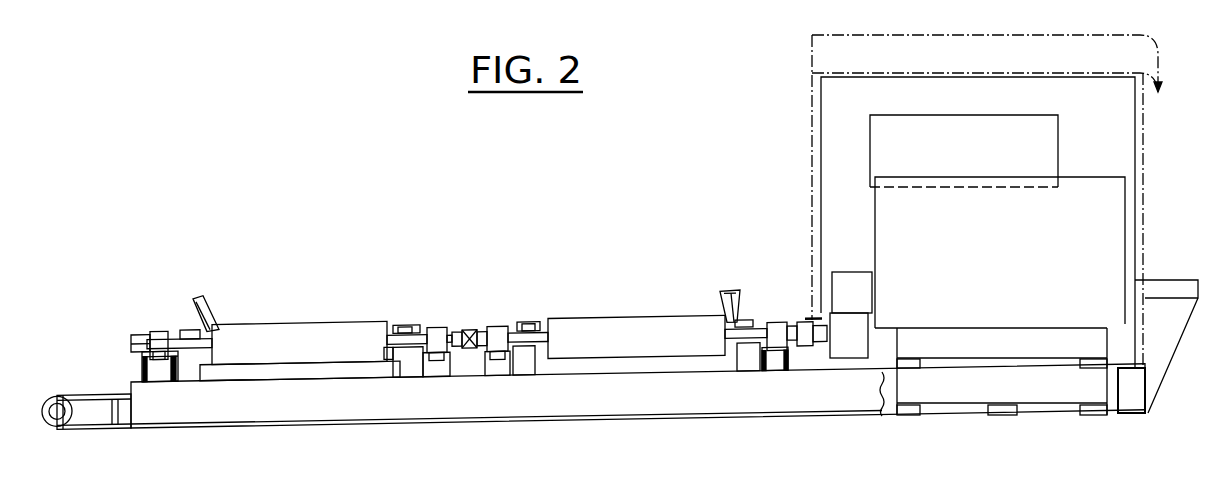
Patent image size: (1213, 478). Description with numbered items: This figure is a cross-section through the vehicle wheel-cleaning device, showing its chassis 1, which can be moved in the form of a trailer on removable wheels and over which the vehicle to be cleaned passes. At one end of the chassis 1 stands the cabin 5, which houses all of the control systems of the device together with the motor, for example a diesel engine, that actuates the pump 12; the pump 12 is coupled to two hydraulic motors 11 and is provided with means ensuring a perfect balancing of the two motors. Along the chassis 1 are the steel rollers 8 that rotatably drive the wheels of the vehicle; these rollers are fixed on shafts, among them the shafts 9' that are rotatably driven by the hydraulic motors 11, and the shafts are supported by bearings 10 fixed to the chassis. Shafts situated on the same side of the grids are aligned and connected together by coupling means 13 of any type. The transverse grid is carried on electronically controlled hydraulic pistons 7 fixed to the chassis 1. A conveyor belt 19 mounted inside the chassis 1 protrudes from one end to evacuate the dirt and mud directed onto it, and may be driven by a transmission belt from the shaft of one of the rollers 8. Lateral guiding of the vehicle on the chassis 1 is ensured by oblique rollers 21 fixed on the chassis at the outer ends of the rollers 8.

The chassis 1 is at (445, 419).
The cabin 5 is at (987, 201).
The hydraulic pistons 7 is at (187, 371).
The steel rollers 8 is at (318, 333).
The shafts 9' is at (794, 323).
The bearings 10 is at (437, 333).
The hydraulic motors 11 is at (850, 335).
The pump 12 is at (852, 292).
The coupling means 13 is at (498, 338).
The conveyor belt 19 is at (97, 394).
The oblique rollers 21 is at (212, 311).